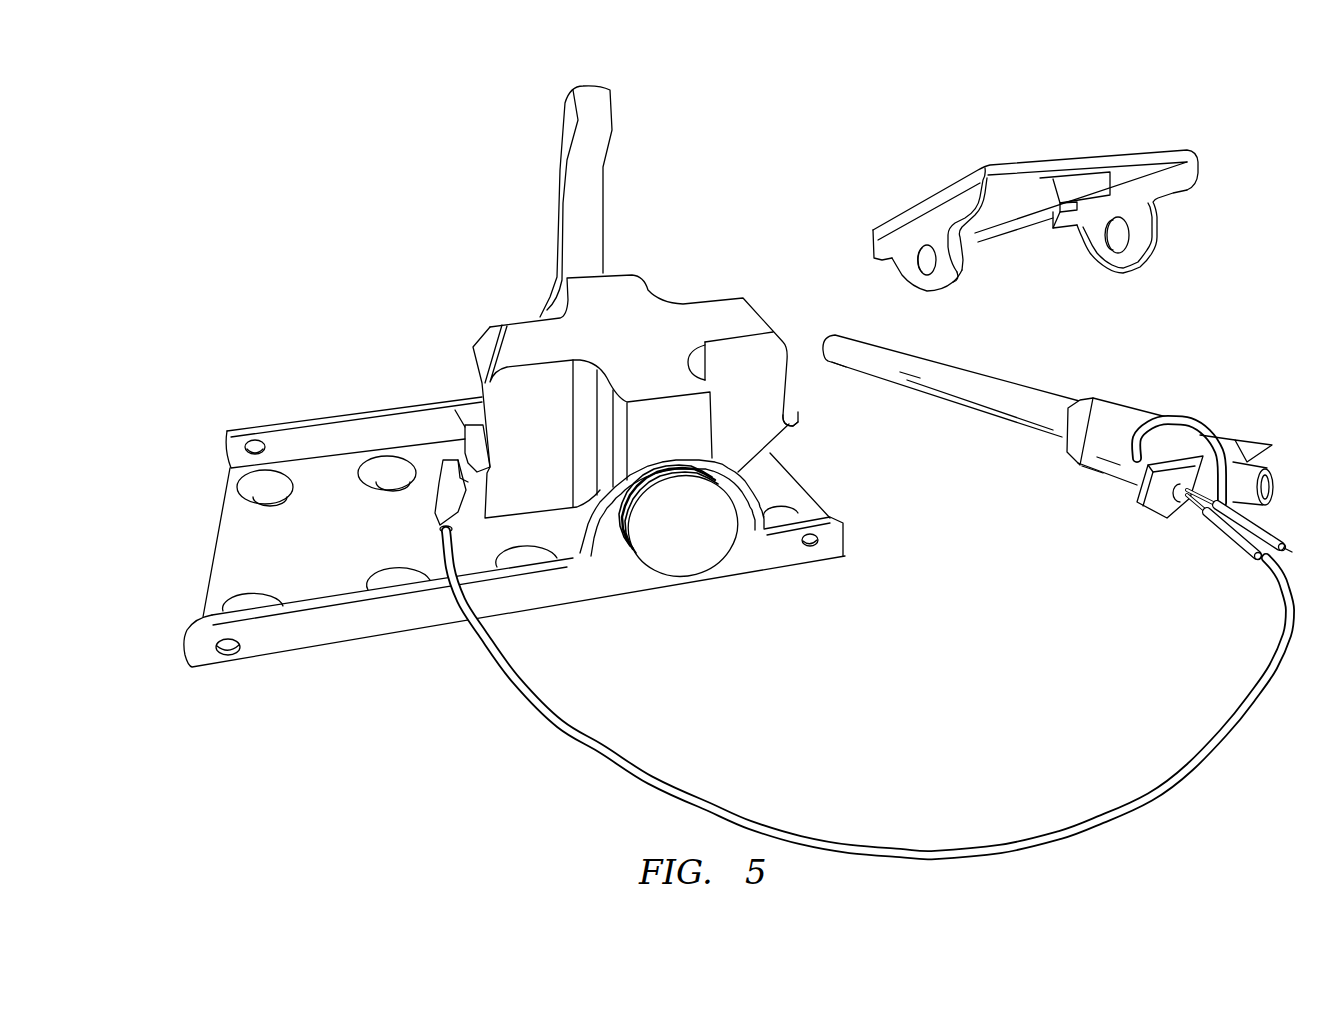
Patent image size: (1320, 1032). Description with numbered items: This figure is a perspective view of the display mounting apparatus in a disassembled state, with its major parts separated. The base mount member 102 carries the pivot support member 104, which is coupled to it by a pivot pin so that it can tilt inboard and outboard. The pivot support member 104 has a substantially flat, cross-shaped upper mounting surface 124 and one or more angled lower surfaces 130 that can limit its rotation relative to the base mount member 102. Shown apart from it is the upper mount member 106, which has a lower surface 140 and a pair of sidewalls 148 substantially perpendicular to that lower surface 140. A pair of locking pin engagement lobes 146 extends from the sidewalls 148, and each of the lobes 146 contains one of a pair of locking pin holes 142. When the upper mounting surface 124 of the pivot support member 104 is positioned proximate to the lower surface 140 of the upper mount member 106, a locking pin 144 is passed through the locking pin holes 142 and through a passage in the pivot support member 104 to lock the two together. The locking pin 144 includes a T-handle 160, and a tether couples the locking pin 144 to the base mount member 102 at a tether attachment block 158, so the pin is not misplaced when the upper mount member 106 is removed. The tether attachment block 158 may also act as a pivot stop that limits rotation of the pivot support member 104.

The base mount member 102 is at (313, 447).
The pivot support member 104 is at (510, 332).
The upper mount member 106 is at (1032, 210).
The upper mounting surface 124 is at (616, 298).
The angled lower surfaces 130 is at (778, 433).
The lower surface 140 is at (1017, 212).
The locking pin holes 142 is at (915, 262).
The locking pin 144 is at (986, 407).
The locking pin engagement lobes 146 is at (940, 238).
The sidewalls 148 is at (965, 203).
The tether attachment block 158 is at (467, 440).
The T-handle 160 is at (1132, 415).